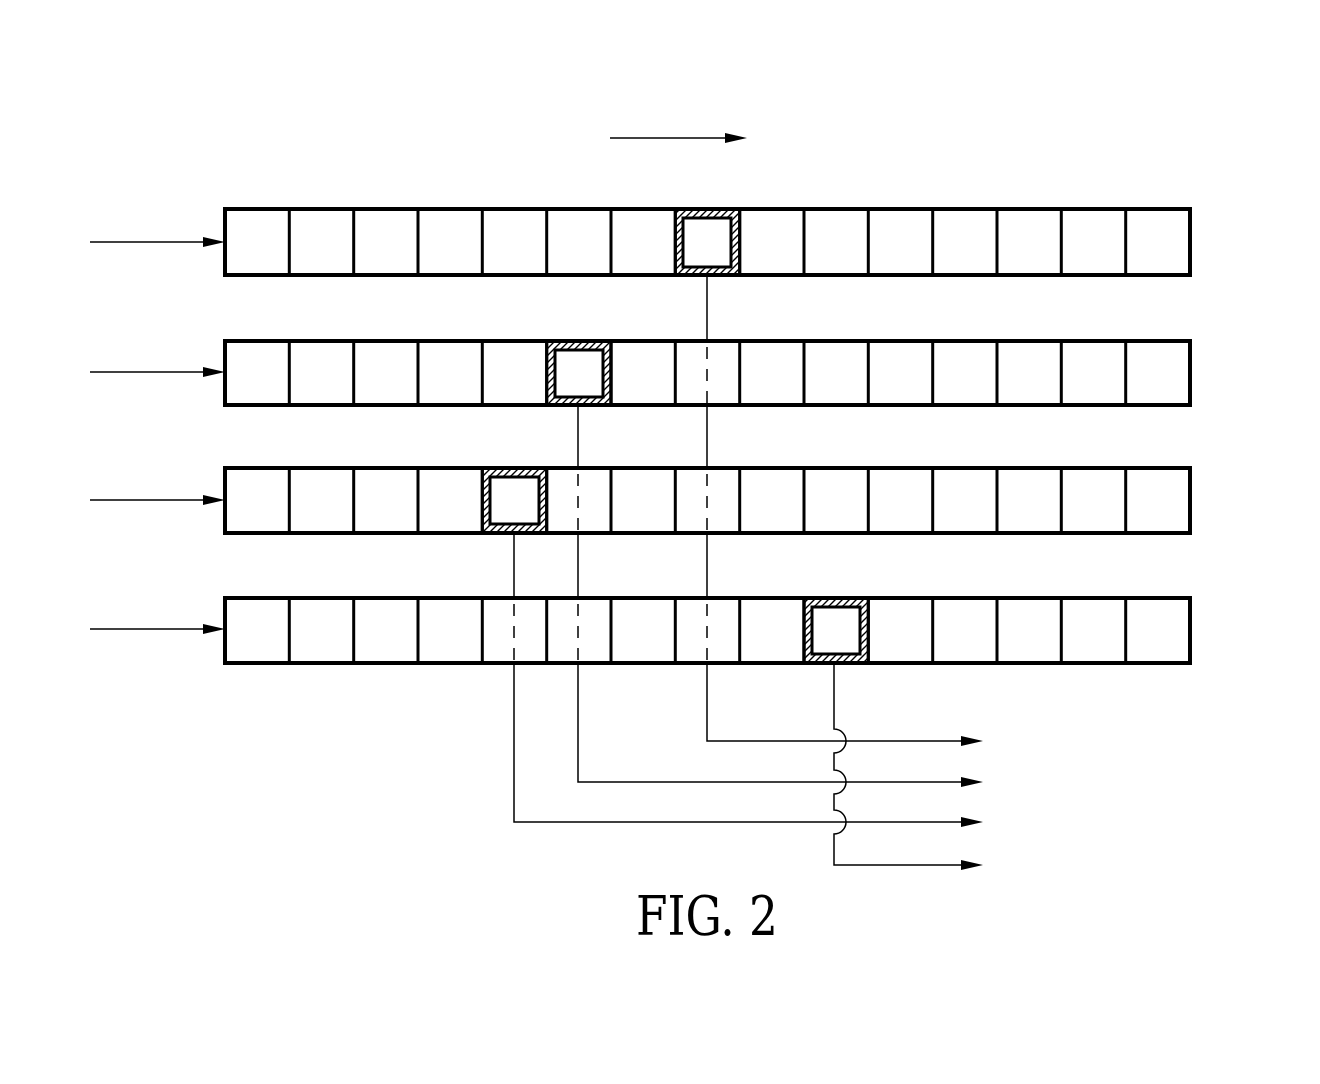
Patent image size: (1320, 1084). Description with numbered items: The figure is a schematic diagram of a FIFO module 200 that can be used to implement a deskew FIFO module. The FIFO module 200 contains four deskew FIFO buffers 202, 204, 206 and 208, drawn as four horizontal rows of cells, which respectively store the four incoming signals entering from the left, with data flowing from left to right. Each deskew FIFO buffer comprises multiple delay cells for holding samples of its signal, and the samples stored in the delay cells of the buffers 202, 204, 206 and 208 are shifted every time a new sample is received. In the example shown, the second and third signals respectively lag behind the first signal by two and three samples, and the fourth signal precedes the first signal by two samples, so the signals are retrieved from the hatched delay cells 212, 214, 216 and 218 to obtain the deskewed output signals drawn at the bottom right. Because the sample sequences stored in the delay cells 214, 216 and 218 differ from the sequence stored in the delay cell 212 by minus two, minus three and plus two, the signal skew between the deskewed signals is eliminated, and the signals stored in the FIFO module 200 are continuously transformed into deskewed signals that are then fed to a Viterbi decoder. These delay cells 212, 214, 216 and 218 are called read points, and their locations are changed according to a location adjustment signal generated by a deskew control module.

The FIFO module 200 is at (1208, 116).
The deskew FIFO buffer 202 is at (1190, 243).
The deskew FIFO buffer 204 is at (1190, 373).
The deskew FIFO buffer 206 is at (1190, 500).
The deskew FIFO buffer 208 is at (1190, 630).
The delay cell 212 is at (707, 209).
The delay cell 214 is at (578, 341).
The delay cell 216 is at (514, 468).
The delay cell 218 is at (834, 598).